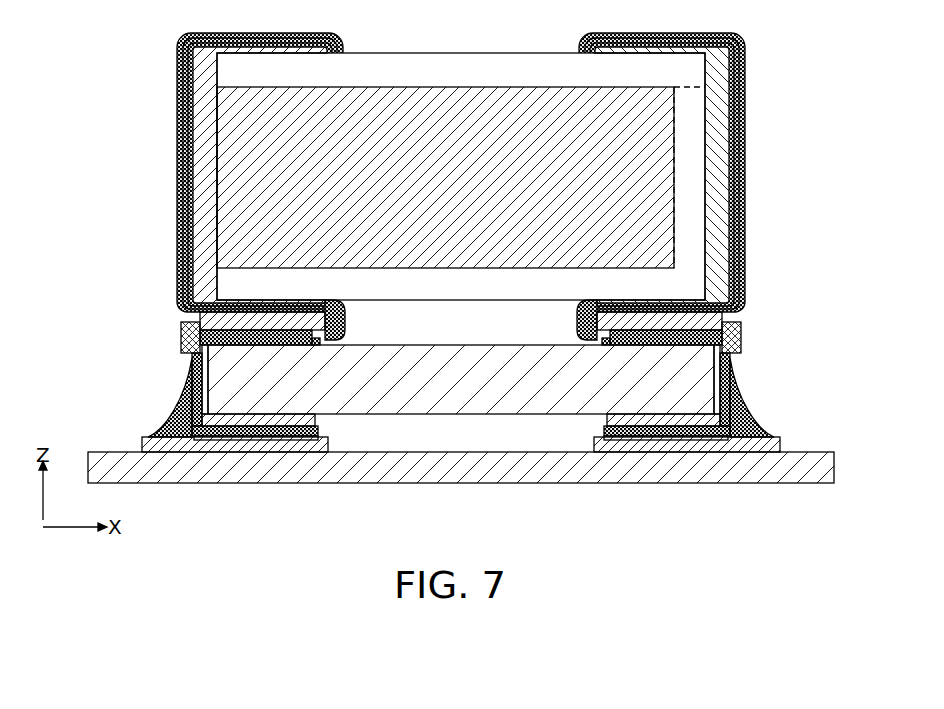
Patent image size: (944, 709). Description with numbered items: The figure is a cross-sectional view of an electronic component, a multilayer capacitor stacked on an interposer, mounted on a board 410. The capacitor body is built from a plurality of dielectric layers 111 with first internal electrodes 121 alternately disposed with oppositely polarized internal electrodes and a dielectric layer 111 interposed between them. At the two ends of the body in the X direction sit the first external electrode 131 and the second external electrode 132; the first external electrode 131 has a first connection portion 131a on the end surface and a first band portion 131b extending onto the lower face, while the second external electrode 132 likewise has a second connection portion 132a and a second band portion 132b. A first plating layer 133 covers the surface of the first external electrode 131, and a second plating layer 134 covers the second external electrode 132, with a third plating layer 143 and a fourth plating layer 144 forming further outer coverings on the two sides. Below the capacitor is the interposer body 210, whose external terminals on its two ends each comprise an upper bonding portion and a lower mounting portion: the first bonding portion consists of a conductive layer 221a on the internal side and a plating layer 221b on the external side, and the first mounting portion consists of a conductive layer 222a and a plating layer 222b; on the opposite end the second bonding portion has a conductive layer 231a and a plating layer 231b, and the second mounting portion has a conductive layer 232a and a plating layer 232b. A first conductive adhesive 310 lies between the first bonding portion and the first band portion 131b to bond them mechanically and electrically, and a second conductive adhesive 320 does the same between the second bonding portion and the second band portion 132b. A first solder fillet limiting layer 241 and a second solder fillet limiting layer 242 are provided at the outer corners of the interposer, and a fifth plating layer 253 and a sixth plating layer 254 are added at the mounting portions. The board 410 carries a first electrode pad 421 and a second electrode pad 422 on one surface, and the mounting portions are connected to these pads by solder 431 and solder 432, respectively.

The dielectric layer 111 is at (478, 73).
The first internal electrode 121 is at (410, 105).
The first external electrode 131 is at (182, 186).
The first connection portion 131a is at (205, 264).
The first band portion 131b is at (268, 299).
The second external electrode 132 is at (739, 186).
The second connection portion 132a is at (718, 264).
The second band portion 132b is at (654, 299).
The first plating layer 133 is at (188, 156).
The second plating layer 134 is at (742, 156).
The third plating layer 143 is at (178, 105).
The fourth plating layer 144 is at (748, 108).
The interposer body 210 is at (455, 397).
The conductive layer 221a is at (203, 370).
The plating layer 221b is at (193, 353).
The conductive layer 222a is at (205, 418).
The plating layer 222b is at (194, 430).
The conductive layer 231a is at (719, 370).
The plating layer 231b is at (729, 353).
The conductive layer 232a is at (717, 418).
The plating layer 232b is at (728, 430).
The first solder fillet limiting layer 241 is at (183, 340).
The second solder fillet limiting layer 242 is at (739, 340).
The fifth plating layer 253 is at (287, 442).
The sixth plating layer 254 is at (640, 442).
The first conductive adhesive 310 is at (198, 314).
The second conductive adhesive 320 is at (724, 314).
The board 410 is at (385, 470).
The first electrode pad 421 is at (234, 447).
The second electrode pad 422 is at (686, 447).
The solder 431 is at (186, 442).
The solder 432 is at (738, 442).